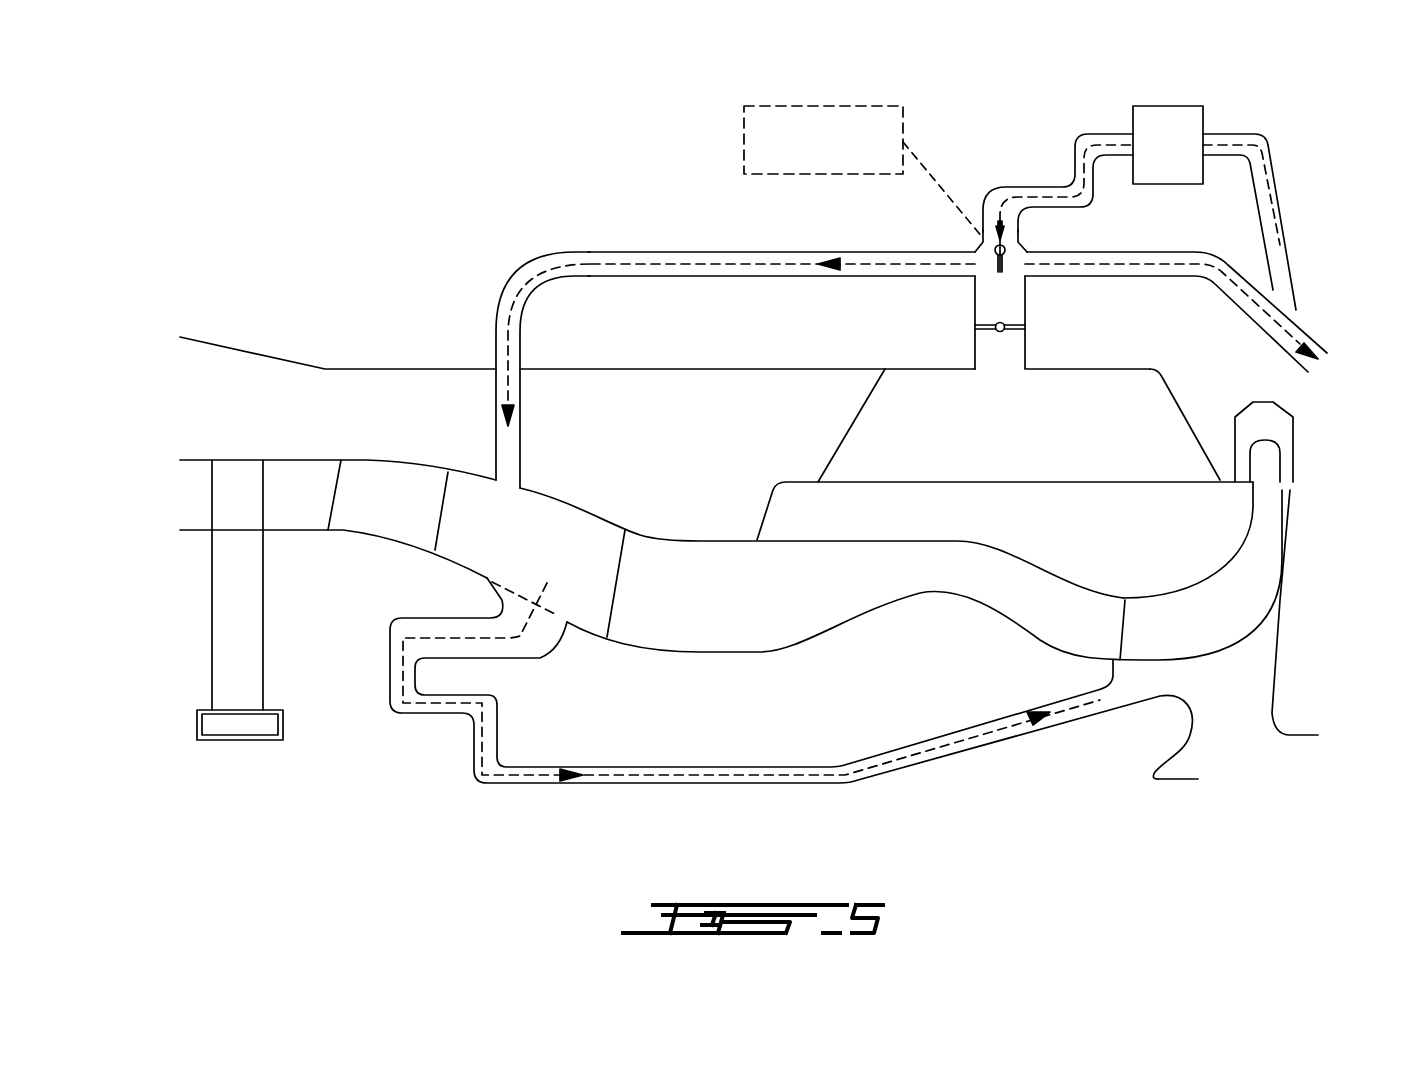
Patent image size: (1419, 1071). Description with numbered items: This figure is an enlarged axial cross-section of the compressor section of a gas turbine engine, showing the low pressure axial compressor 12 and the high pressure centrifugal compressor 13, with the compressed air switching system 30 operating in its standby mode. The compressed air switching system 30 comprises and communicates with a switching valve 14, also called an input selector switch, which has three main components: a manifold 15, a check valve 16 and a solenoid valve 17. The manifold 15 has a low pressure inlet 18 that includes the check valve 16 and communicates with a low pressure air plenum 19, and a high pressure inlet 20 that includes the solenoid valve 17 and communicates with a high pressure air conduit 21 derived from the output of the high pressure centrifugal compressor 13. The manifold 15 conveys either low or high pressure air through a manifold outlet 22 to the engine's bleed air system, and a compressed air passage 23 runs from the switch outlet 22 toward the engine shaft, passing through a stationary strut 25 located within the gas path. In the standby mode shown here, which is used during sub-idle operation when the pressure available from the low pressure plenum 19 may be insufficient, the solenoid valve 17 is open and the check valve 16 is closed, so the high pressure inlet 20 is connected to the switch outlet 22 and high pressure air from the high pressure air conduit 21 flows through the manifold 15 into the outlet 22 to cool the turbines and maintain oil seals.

The low pressure axial compressor 12 is at (310, 770).
The high pressure centrifugal compressor 13 is at (1220, 678).
The switching valve 14 is at (1024, 218).
The manifold 15 is at (983, 236).
The check valve 16 is at (975, 326).
The solenoid valve 17 is at (1172, 125).
The low pressure inlet 18 is at (1012, 358).
The low pressure air plenum 19 is at (1074, 444).
The high pressure inlet 20 is at (1116, 137).
The high pressure air conduit 21 is at (1272, 223).
The manifold outlet 22 is at (900, 250).
The compressed air passage 23 is at (518, 278).
The stationary strut 25 is at (472, 498).
The compressed air switching system 30 is at (834, 151).